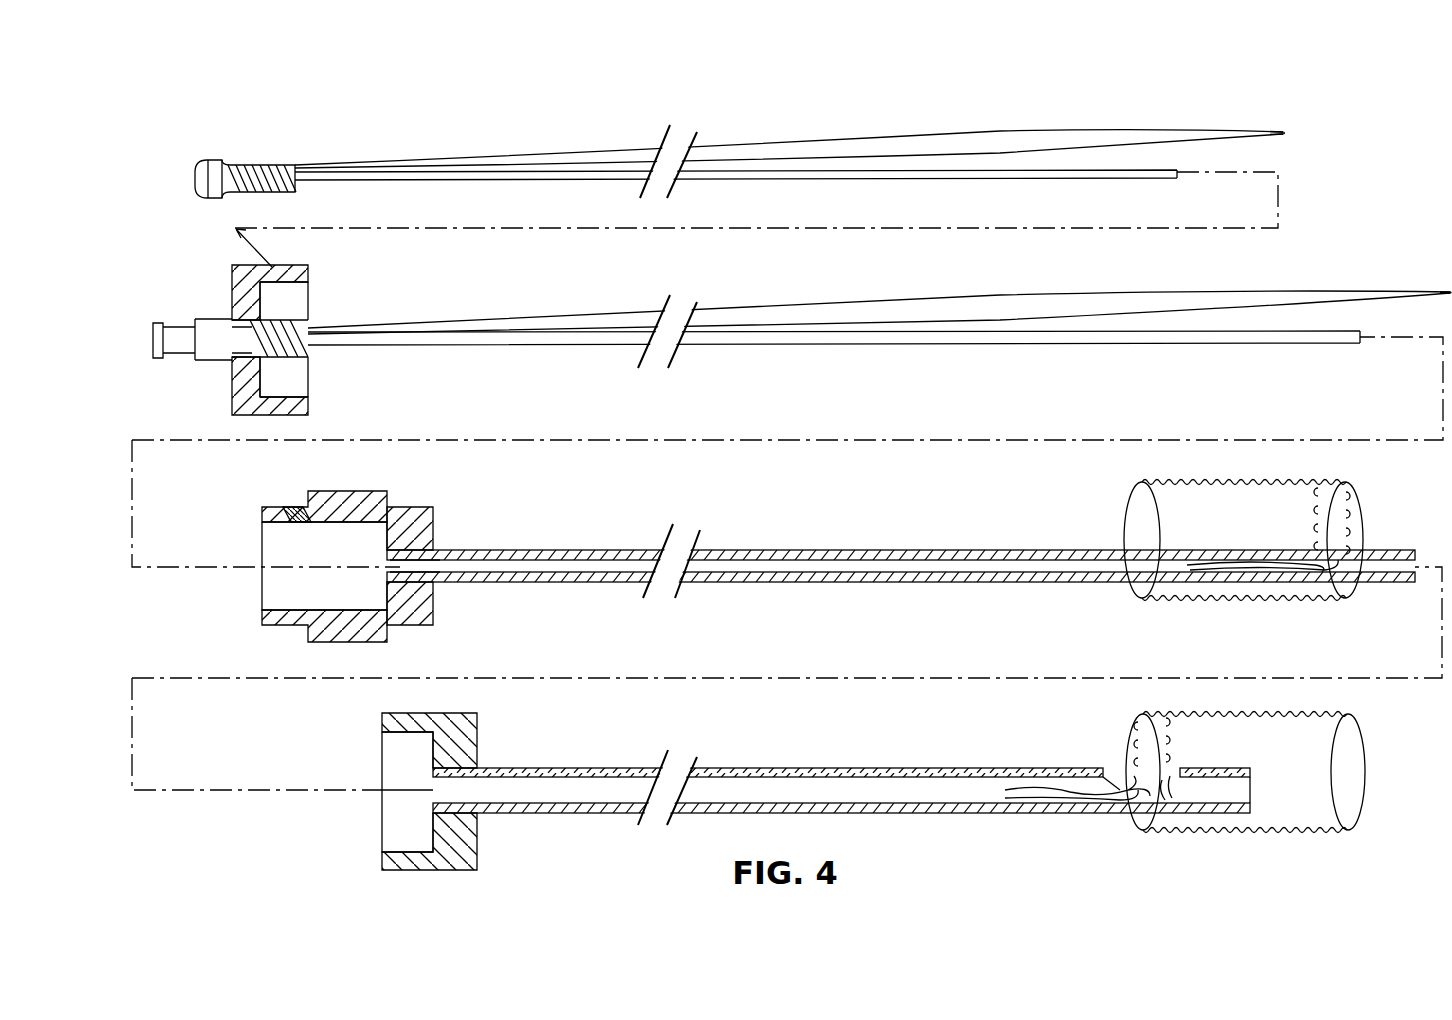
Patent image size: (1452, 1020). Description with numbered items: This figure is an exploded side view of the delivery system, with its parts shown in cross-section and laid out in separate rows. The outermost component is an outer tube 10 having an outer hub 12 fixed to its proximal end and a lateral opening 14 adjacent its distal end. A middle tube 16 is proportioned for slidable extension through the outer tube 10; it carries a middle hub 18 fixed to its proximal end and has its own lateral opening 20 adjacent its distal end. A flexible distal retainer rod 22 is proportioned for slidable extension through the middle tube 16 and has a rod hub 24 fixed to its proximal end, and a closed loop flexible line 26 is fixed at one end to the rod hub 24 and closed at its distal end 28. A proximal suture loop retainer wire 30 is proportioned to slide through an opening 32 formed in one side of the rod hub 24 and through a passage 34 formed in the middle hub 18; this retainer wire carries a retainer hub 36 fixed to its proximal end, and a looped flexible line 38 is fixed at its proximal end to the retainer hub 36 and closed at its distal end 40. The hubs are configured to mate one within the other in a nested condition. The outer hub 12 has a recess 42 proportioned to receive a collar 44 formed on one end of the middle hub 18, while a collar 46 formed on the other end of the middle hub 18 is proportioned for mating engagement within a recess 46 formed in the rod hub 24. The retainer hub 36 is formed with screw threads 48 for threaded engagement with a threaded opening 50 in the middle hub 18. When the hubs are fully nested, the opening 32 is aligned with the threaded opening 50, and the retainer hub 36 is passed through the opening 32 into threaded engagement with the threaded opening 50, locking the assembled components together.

The outer tube 10 is at (790, 767).
The outer hub 12 is at (387, 723).
The lateral opening 14 is at (1108, 768).
The middle tube 16 is at (782, 548).
The middle hub 18 is at (347, 498).
The lateral opening 20 is at (1330, 565).
The flexible distal retainer rod 22 is at (1052, 342).
The rod hub 24 is at (310, 408).
The closed loop flexible line 26 is at (1087, 290).
The distal end 28 is at (1450, 292).
The proximal suture loop retainer wire 30 is at (780, 177).
The opening 32 is at (270, 267).
The passage 34 is at (427, 587).
The retainer hub 36 is at (265, 194).
The looped flexible line 38 is at (1088, 130).
The distal end 40 is at (1283, 133).
The recess 42 is at (403, 850).
The collar 44 is at (410, 508).
The collar 46 is at (287, 625).
The screw threads 48 is at (253, 167).
The threaded opening 50 is at (290, 512).